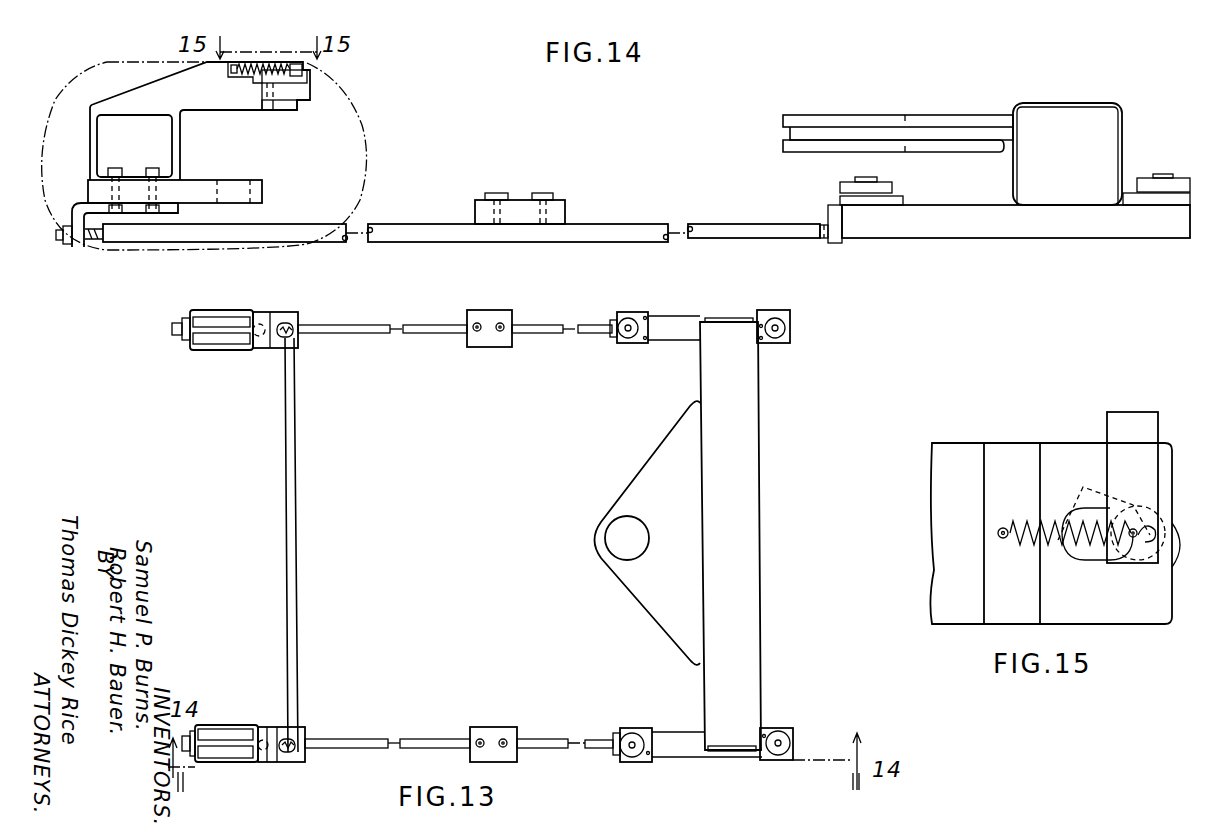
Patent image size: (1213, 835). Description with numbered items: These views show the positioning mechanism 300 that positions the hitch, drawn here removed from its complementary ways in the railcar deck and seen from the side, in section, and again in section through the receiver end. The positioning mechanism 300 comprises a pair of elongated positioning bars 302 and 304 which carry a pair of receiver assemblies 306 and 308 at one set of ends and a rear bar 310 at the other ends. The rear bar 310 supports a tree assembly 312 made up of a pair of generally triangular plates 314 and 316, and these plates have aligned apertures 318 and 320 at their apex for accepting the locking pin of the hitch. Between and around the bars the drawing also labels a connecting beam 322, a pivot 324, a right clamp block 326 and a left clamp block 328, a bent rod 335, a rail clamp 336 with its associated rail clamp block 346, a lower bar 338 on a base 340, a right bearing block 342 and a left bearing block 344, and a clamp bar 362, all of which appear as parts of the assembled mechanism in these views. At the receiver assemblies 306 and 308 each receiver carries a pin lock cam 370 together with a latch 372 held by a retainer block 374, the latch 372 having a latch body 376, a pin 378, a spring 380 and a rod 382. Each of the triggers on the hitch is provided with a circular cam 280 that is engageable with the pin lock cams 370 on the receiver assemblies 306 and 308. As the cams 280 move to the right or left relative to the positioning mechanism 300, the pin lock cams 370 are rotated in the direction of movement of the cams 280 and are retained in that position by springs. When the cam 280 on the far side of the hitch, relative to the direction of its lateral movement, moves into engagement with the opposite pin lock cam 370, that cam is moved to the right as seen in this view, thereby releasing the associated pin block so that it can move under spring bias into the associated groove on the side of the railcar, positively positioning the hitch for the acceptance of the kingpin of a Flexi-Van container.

In FIG. 14, the positioning mechanism 300 is at (633, 153).
In FIG. 13, the positioning mechanism 300 is at (800, 410).
In FIG. 13, the positioning bar 302 is at (543, 323).
In FIG. 14, the positioning bar 304 is at (769, 236).
In FIG. 13, the positioning bar 304 is at (417, 738).
In FIG. 13, the receiver assembly 306 is at (240, 305).
In FIG. 14, the receiver assembly 308 is at (147, 84).
In FIG. 13, the receiver assembly 308 is at (218, 723).
In FIG. 15, the receiver assembly 308 is at (930, 520).
In FIG. 14, the rear bar 310 is at (1124, 128).
In FIG. 13, the rear bar 310 is at (760, 498).
In FIG. 14, the tree assembly 312 is at (943, 114).
In FIG. 13, the tree assembly 312 is at (645, 455).
In FIG. 14, the triangular plate 314 is at (858, 120).
In FIG. 13, the triangular plate 314 is at (640, 483).
In FIG. 14, the triangular plate 316 is at (837, 143).
In FIG. 14, the aperture 318 is at (828, 103).
In FIG. 13, the aperture 318 is at (605, 538).
In FIG. 14, the aperture 320 is at (782, 133).
In FIG. 13, the connecting beam 322 is at (627, 347).
In FIG. 13, the pivot 324 is at (760, 345).
In FIG. 14, the right clamp block 326 is at (1147, 177).
In FIG. 13, the right clamp block 326 is at (780, 733).
In FIG. 14, the left clamp block 328 is at (893, 183).
In FIG. 13, the left clamp block 328 is at (637, 727).
In FIG. 14, the bent rod 335 is at (178, 208).
In FIG. 14, the rail clamp 336 is at (570, 201).
In FIG. 13, the rail clamp 336 is at (508, 727).
In FIG. 14, the lower bar 338 is at (905, 203).
In FIG. 13, the lower bar 338 is at (650, 762).
In FIG. 14, the base 340 is at (1162, 207).
In FIG. 13, the base 340 is at (790, 760).
In FIG. 13, the right bearing block 342 is at (777, 310).
In FIG. 13, the left bearing block 344 is at (660, 290).
In FIG. 13, the rail clamp block 346 is at (510, 293).
In FIG. 14, the clamp bar 362 is at (190, 187).
In FIG. 14, the pin lock cam 370 is at (298, 118).
In FIG. 15, the pin lock cam 370 is at (1087, 567).
In FIG. 15, the latch 372 is at (1097, 528).
In FIG. 14, the retainer block 374 is at (305, 82).
In FIG. 15, the retainer block 374 is at (1087, 565).
In FIG. 15, the latch body 376 is at (1052, 533).
In FIG. 15, the pin 378 is at (1140, 557).
In FIG. 15, the spring 380 is at (1005, 528).
In FIG. 14, the rod 382 is at (298, 70).
In FIG. 13, the rod 382 is at (300, 453).
In FIG. 15, the rod 382 is at (1132, 417).
In FIG. 15, the circular cam 280 is at (1173, 567).